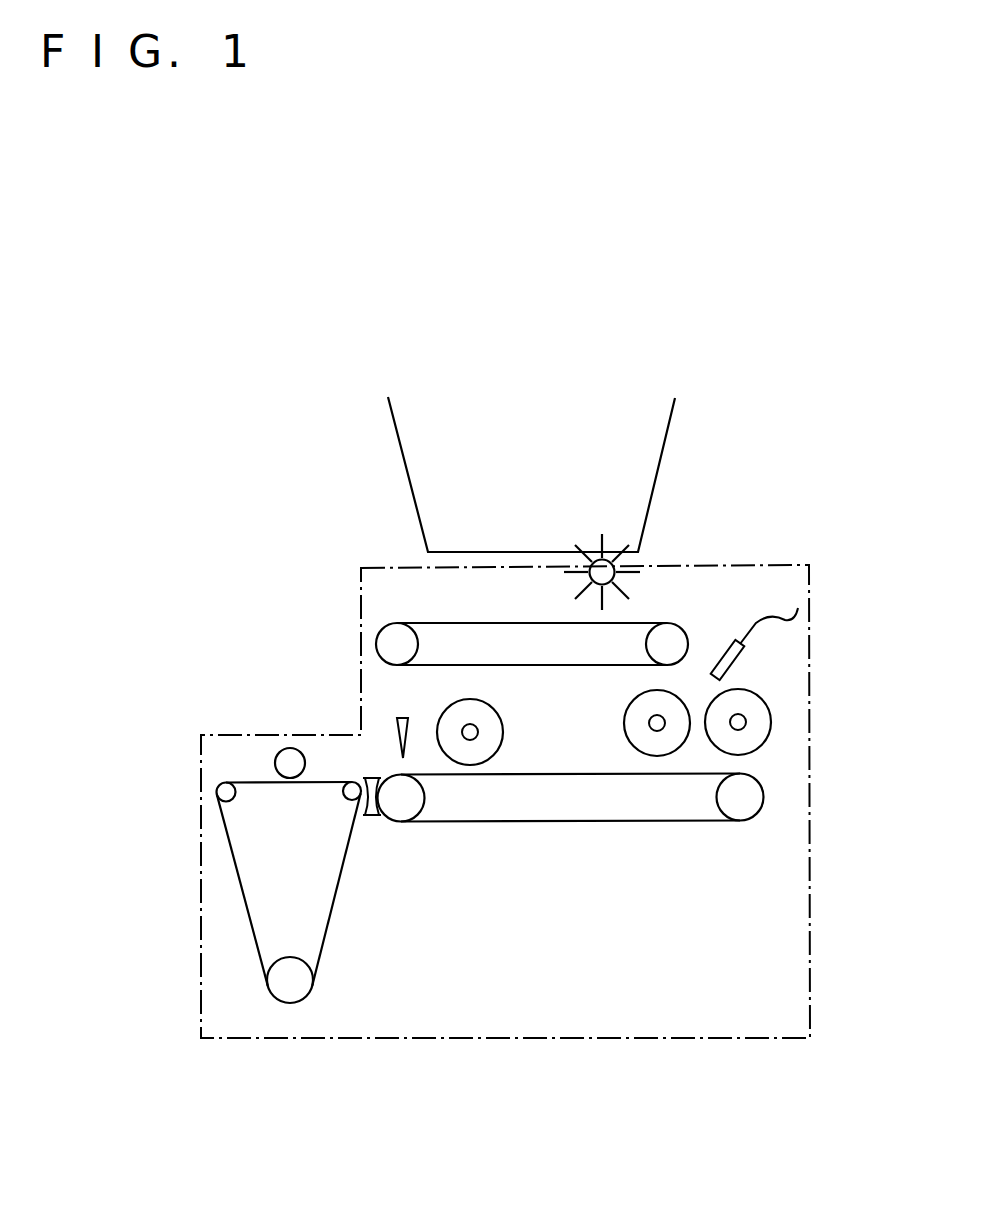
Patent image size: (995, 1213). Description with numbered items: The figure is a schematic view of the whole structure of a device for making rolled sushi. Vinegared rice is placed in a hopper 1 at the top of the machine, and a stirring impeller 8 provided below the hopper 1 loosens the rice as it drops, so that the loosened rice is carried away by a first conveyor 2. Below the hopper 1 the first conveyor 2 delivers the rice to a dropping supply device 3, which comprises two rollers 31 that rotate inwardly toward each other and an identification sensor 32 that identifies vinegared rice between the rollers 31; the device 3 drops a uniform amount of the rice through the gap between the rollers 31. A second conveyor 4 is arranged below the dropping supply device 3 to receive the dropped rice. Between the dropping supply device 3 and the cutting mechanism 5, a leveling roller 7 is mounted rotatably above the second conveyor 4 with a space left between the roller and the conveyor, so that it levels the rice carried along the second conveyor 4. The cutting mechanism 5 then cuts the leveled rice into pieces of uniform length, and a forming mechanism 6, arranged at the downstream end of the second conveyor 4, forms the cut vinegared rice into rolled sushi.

The hopper 1 is at (398, 437).
The first conveyor 2 is at (418, 627).
The dropping supply device 3 is at (743, 682).
The rollers 31 is at (624, 714).
The identification sensor 32 is at (740, 658).
The second conveyor 4 is at (673, 823).
The cutting mechanism 5 is at (393, 730).
The forming mechanism 6 is at (227, 835).
The leveling roller 7 is at (503, 722).
The stirring impeller 8 is at (613, 563).